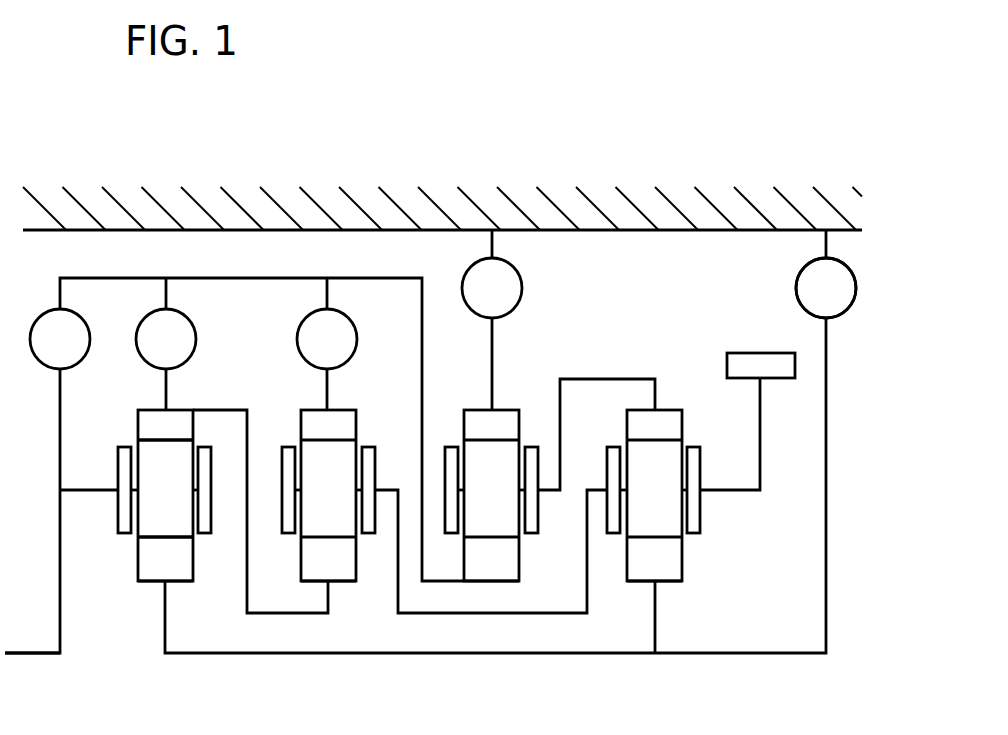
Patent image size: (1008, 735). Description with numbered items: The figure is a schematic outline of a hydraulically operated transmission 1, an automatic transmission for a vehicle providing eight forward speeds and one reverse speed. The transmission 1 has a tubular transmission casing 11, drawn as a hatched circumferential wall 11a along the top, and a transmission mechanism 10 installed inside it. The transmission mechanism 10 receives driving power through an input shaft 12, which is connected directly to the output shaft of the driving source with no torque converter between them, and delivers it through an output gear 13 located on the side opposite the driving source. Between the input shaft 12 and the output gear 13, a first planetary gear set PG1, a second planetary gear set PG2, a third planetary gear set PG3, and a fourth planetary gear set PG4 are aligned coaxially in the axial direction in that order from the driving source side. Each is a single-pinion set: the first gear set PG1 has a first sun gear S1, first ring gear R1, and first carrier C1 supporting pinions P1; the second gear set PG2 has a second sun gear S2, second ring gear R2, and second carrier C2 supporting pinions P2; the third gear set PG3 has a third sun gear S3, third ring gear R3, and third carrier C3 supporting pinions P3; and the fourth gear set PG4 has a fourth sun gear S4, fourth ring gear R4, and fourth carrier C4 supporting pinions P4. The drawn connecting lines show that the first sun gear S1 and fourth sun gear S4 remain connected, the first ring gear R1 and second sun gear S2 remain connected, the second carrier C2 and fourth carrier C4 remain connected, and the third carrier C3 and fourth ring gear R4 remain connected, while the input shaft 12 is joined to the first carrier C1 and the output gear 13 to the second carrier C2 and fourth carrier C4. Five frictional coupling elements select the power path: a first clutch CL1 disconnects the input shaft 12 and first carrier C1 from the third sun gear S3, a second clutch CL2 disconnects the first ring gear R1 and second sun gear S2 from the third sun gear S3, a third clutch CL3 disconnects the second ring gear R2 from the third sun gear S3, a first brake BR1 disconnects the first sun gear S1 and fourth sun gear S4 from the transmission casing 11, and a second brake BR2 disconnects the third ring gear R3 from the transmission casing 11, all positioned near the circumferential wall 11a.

The hydraulically operated transmission 1 is at (826, 181).
The transmission mechanism 10 is at (860, 268).
The transmission casing 11 is at (442, 168).
The circumferential wall 11a is at (637, 192).
The input shaft 12 is at (33, 648).
The output gear 13 is at (742, 350).
The first planetary gear set PG1 is at (195, 468).
The second planetary gear set PG2 is at (358, 467).
The third planetary gear set PG3 is at (522, 453).
The fourth planetary gear set PG4 is at (707, 512).
The first carrier C1 is at (125, 446).
The second carrier C2 is at (289, 446).
The third carrier C3 is at (452, 446).
The fourth carrier C4 is at (611, 446).
The first clutch CL1 is at (60, 339).
The second clutch CL2 is at (166, 339).
The third clutch CL3 is at (327, 339).
The first brake BR1 is at (826, 288).
The second brake BR2 is at (492, 288).
The first ring gear R1 is at (165, 426).
The second ring gear R2 is at (328, 426).
The third ring gear R3 is at (491, 426).
The fourth ring gear R4 is at (654, 426).
The pinions P1 is at (165, 507).
The pinions P2 is at (328, 507).
The pinions P3 is at (491, 507).
The pinions P4 is at (654, 507).
The first sun gear S1 is at (165, 564).
The second sun gear S2 is at (328, 564).
The third sun gear S3 is at (491, 564).
The fourth sun gear S4 is at (654, 564).